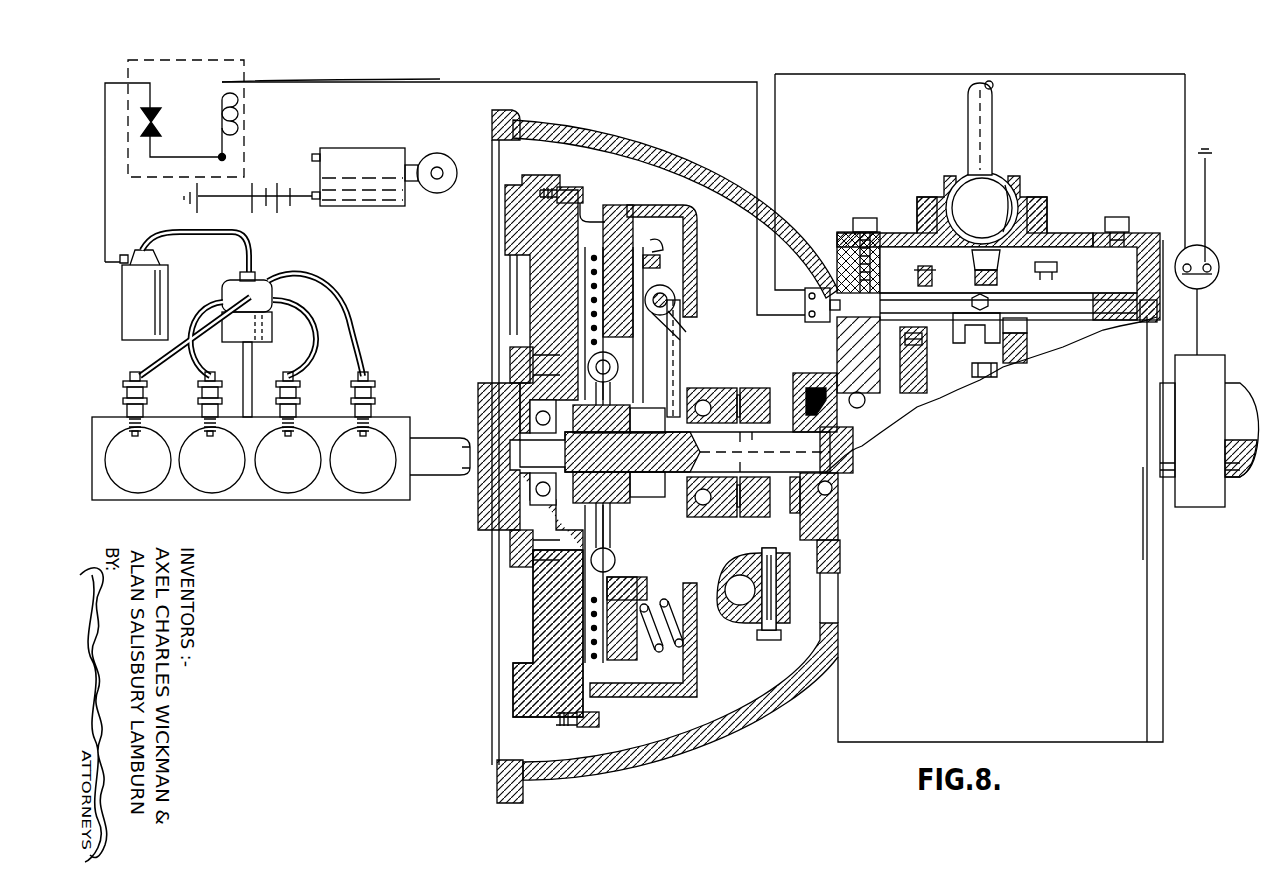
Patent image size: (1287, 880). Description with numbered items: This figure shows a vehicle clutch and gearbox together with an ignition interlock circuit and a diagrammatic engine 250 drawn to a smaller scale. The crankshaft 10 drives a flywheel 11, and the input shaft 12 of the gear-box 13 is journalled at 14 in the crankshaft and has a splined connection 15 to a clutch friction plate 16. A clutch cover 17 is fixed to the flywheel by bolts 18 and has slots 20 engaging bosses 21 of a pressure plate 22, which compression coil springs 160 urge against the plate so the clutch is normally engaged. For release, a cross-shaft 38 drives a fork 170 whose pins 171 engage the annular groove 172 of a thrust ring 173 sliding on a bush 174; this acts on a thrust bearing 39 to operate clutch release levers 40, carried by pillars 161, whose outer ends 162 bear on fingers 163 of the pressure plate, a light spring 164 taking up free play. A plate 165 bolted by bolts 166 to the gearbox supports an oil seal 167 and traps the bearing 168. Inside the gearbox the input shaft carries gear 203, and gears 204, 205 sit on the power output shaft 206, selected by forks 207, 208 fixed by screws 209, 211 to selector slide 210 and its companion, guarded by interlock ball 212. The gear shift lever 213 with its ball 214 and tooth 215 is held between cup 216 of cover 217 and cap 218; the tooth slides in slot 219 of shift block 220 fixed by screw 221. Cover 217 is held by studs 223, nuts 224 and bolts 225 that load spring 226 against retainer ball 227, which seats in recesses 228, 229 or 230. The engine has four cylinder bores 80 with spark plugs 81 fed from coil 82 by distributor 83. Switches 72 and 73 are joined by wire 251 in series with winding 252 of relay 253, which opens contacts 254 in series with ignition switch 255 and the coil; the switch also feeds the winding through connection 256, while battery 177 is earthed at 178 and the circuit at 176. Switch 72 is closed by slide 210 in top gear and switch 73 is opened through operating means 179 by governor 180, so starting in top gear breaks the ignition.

The crankshaft 10 is at (440, 472).
The flywheel 11 is at (507, 216).
The input shaft 12 is at (675, 450).
The gear-box 13 is at (998, 572).
The journal 14 is at (478, 418).
The splined connection 15 is at (627, 493).
The clutch friction plate 16 is at (583, 630).
The clutch cover 17 is at (627, 692).
The bolts 18 is at (600, 712).
The slots 20 is at (588, 210).
The bosses 21 is at (628, 210).
The pressure plate 22 is at (617, 647).
The cross-shaft 38 is at (743, 600).
The thrust bearing 39 is at (703, 397).
The clutch release levers 40 is at (678, 400).
The switch 72 is at (815, 297).
The switch 73 is at (1220, 265).
The cylinder bores 80 is at (152, 472).
The spark plugs 81 is at (355, 398).
The coil 82 is at (154, 303).
The distributor 83 is at (268, 330).
The compression coil springs 160 is at (667, 606).
The pillars 161 is at (688, 280).
The outer ends 162 is at (660, 262).
The fingers 163 is at (658, 250).
The light spring 164 is at (657, 323).
The plate 165 is at (825, 520).
The bolts 166 is at (835, 563).
The oil seal 167 is at (833, 490).
The bearing 168 is at (877, 402).
The fork 170 is at (763, 555).
The pins 171 is at (726, 450).
The annular groove 172 is at (747, 516).
The thrust ring 173 is at (770, 517).
The bush 174 is at (707, 481).
The earth connection 176 is at (188, 203).
The battery 177 is at (253, 210).
The earth connection 178 is at (1212, 155).
The operating means 179 is at (1203, 342).
The governor 180 is at (1218, 442).
The gear 203 is at (910, 380).
The gear 204 is at (988, 387).
The gear 205 is at (1037, 365).
The power output shaft 206 is at (1238, 478).
The selector fork 207 is at (952, 388).
The selector fork 208 is at (1057, 342).
The screw 209 is at (950, 267).
The selector slide 210 is at (890, 290).
The screw 211 is at (1057, 280).
The interlock ball 212 is at (1078, 330).
The gear shift lever 213 is at (983, 113).
The ball 214 is at (995, 220).
The gear shift tooth 215 is at (1022, 265).
The part spherical cup 216 is at (1025, 207).
The cover 217 is at (1100, 233).
The part spherical cap 218 is at (927, 197).
The slot 219 is at (1003, 280).
The shift block 220 is at (997, 318).
The screw 221 is at (983, 367).
The studs 223 is at (1137, 243).
The nuts 224 is at (1128, 225).
The bolts 225 is at (863, 220).
The spring 226 is at (832, 247).
The retainer ball 227 is at (823, 247).
The recess 228 is at (868, 300).
The recess 229 is at (855, 322).
The recess 230 is at (850, 345).
The engine 250 is at (107, 418).
The wire 251 is at (680, 77).
The winding 252 is at (233, 117).
The relay 253 is at (245, 97).
The contacts 254 is at (160, 126).
The ignition switch 255 is at (385, 176).
The connection 256 is at (222, 157).